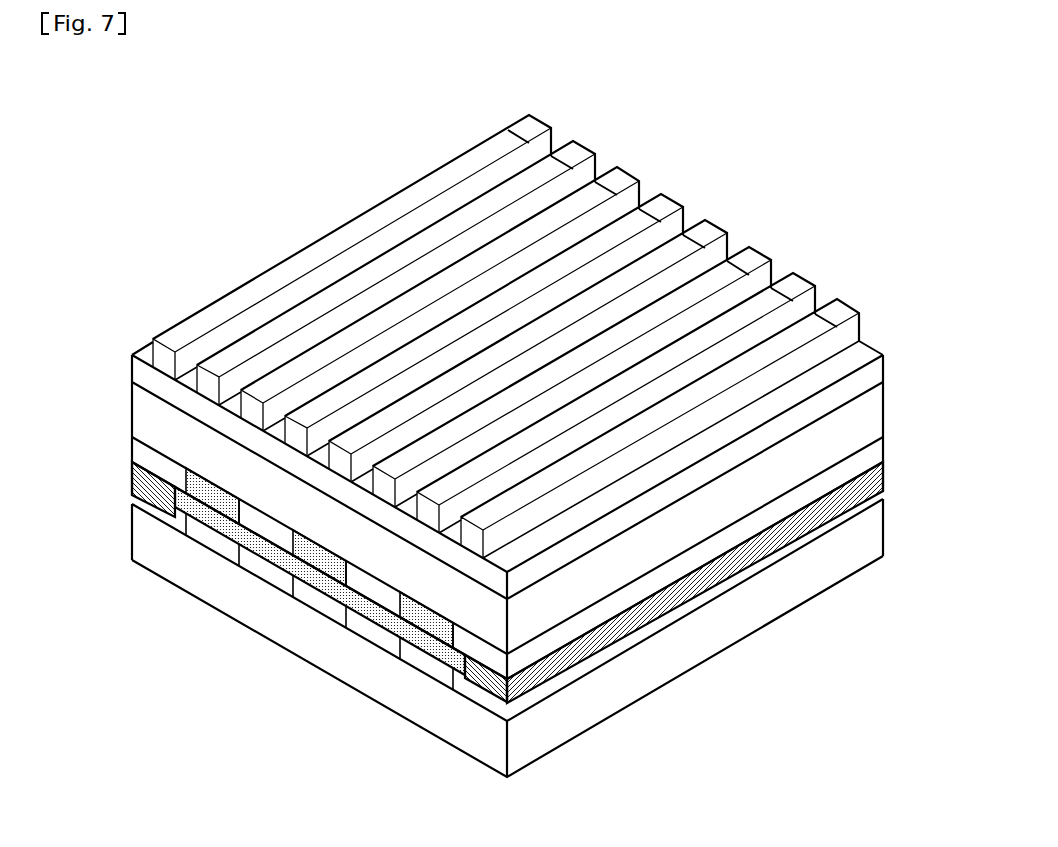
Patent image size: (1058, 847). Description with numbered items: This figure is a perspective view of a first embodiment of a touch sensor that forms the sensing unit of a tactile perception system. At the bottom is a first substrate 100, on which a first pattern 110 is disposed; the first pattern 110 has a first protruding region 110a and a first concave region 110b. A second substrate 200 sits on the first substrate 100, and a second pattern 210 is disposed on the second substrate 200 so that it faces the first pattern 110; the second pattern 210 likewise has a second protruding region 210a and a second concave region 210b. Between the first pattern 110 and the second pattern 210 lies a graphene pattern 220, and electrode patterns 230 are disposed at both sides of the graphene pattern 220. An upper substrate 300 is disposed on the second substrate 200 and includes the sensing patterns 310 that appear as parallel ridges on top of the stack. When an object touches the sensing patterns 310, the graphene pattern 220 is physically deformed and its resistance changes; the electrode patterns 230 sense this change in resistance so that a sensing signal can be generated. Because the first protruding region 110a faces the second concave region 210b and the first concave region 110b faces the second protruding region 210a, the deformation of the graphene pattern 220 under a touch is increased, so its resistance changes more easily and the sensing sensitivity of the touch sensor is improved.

The first substrate 100 is at (877, 539).
The first pattern 110 is at (234, 702).
The first protruding region 110a is at (213, 537).
The first concave region 110b is at (271, 567).
The second substrate 200 is at (877, 409).
The second pattern 210 is at (395, 795).
The second protruding region 210a is at (385, 593).
The second concave region 210b is at (435, 623).
The graphene pattern 220 is at (330, 588).
The electrode patterns 230 is at (484, 683).
The upper substrate 300 is at (877, 371).
The sensing patterns 310 is at (626, 168).